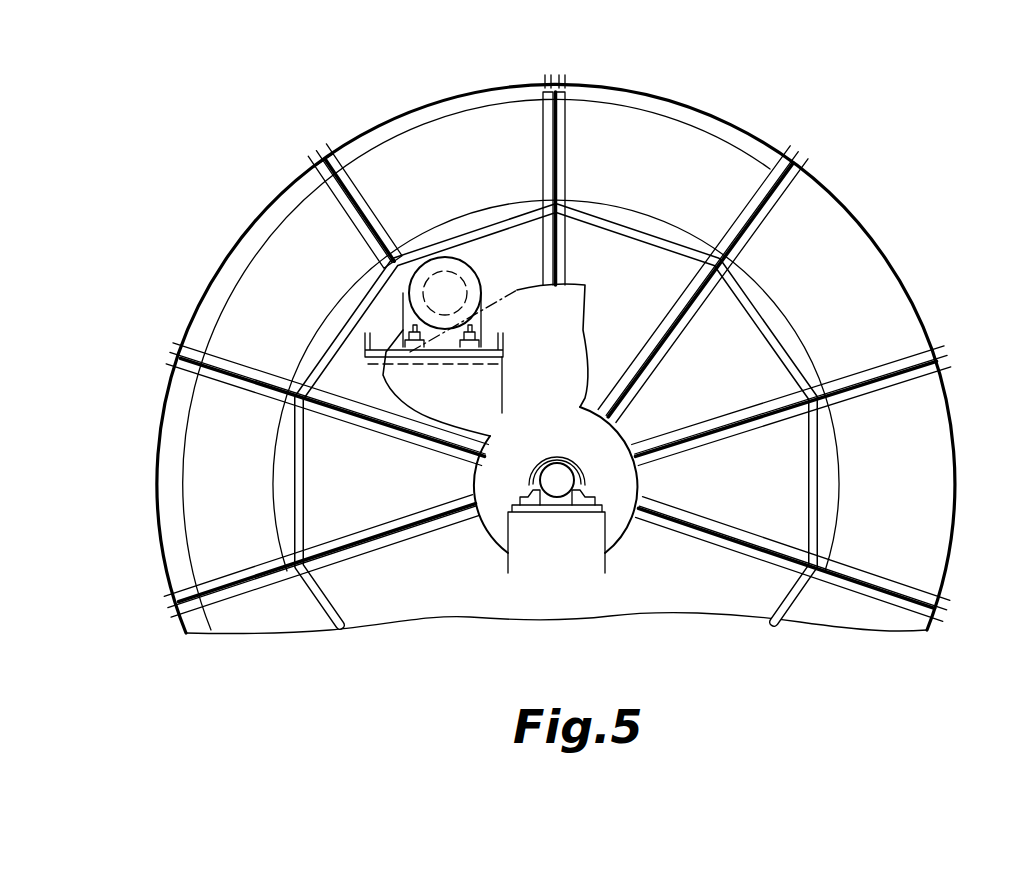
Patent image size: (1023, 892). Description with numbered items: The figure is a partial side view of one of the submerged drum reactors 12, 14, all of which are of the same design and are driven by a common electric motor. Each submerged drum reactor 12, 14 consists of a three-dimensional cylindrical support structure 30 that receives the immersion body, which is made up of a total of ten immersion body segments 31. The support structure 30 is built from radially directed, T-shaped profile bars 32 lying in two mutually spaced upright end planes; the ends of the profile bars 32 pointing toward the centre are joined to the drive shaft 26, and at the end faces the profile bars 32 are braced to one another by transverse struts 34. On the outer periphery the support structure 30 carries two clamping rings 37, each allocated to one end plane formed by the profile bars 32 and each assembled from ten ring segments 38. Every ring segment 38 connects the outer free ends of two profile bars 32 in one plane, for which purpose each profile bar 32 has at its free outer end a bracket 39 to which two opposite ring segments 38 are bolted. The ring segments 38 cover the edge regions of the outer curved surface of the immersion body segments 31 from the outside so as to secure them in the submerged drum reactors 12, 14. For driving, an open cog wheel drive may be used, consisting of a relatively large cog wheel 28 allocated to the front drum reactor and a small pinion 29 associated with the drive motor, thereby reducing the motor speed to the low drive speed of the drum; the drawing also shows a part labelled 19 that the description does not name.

The submerged drum reactor 12 is at (579, 342).
The submerged drum reactor 14 is at (579, 342).
The shaft 19 is at (557, 480).
The drive shaft 26 is at (558, 490).
The cog wheel 28 is at (535, 330).
The pinion 29 is at (444, 283).
The support structure 30 is at (203, 256).
The immersion body segment 31 is at (843, 288).
The profile bar 32 is at (545, 148).
The transverse strut 34 is at (628, 240).
The clamping ring 37 is at (262, 192).
The ring segment 38 is at (729, 125).
The bracket 39 is at (946, 356).